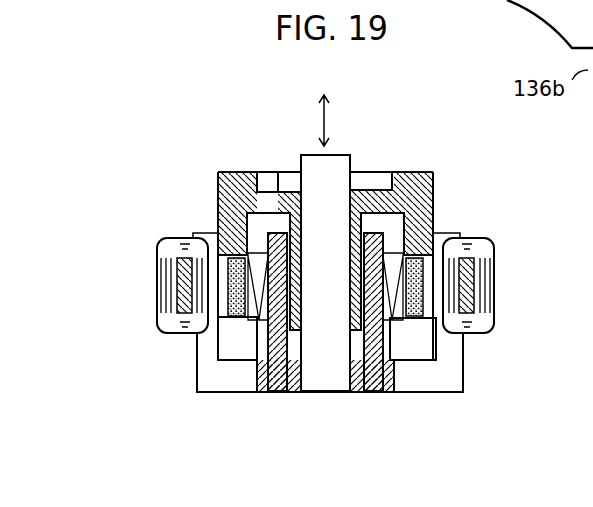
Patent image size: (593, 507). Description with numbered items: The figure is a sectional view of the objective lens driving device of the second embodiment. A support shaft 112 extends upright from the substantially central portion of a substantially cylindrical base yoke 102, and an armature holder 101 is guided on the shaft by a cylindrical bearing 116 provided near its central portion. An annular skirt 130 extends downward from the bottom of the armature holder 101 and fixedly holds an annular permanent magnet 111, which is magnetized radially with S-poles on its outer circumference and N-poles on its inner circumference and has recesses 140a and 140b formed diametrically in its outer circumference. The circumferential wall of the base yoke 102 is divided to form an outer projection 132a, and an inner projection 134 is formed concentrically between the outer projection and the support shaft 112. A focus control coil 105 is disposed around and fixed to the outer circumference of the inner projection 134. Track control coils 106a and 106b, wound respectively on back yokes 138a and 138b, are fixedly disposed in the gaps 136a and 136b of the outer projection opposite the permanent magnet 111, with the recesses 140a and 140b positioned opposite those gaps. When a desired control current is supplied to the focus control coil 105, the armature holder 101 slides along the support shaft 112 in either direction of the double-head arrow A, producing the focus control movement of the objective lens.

The armature holder 101 is at (422, 190).
The base yoke 102 is at (393, 360).
The focus control coil 105 is at (403, 318).
The track control coil 106a is at (485, 250).
The track control coil 106b is at (170, 246).
The annular permanent magnet 111 is at (240, 318).
The support shaft 112 is at (302, 155).
The cylindrical bearing 116 is at (381, 190).
The annular skirt 130 is at (425, 240).
The outer projection 132a is at (208, 233).
The inner projection 134 is at (275, 233).
The gap 136a is at (443, 377).
The gap 136b is at (200, 373).
The back yoke 138a is at (472, 280).
The back yoke 138b is at (186, 274).
The recess 140a is at (437, 327).
The recess 140b is at (217, 340).
The double-head arrow A is at (324, 118).